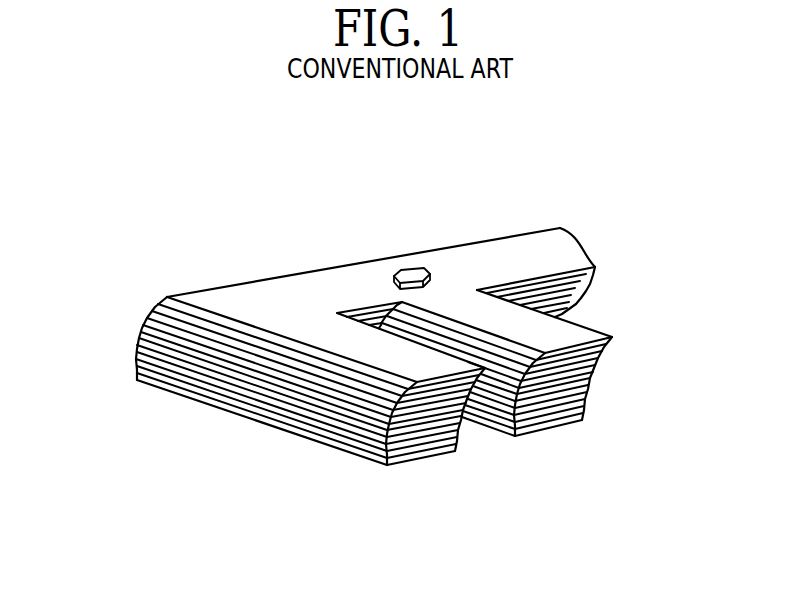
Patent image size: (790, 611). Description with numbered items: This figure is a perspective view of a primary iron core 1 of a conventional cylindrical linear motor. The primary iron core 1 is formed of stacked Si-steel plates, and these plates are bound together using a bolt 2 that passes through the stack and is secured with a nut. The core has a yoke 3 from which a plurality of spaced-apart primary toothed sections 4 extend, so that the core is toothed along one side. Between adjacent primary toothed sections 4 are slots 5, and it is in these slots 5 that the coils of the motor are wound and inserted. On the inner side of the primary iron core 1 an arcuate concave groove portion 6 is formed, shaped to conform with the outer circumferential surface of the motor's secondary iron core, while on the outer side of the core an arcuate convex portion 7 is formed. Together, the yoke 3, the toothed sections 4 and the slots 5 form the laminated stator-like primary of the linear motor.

The primary iron core 1 is at (497, 228).
The bolt 2 is at (410, 268).
The yoke 3 is at (300, 282).
The primary toothed section 4 is at (540, 327).
The slot 5 is at (487, 397).
The arcuate concave groove portion 6 is at (549, 391).
The arcuate convex portion 7 is at (130, 347).